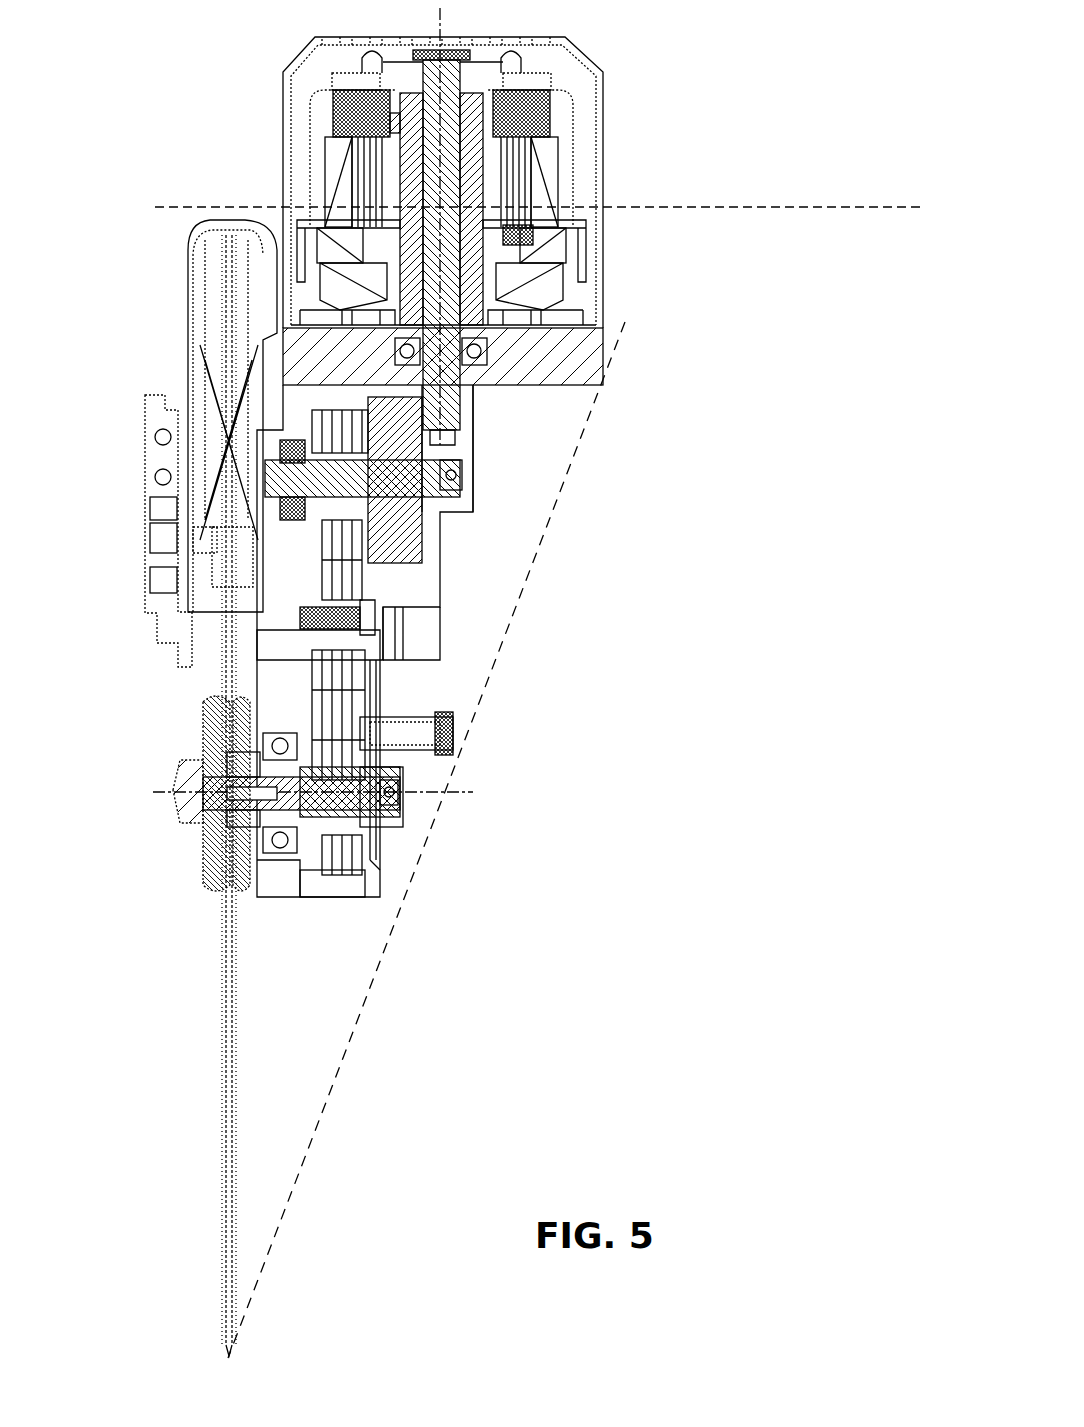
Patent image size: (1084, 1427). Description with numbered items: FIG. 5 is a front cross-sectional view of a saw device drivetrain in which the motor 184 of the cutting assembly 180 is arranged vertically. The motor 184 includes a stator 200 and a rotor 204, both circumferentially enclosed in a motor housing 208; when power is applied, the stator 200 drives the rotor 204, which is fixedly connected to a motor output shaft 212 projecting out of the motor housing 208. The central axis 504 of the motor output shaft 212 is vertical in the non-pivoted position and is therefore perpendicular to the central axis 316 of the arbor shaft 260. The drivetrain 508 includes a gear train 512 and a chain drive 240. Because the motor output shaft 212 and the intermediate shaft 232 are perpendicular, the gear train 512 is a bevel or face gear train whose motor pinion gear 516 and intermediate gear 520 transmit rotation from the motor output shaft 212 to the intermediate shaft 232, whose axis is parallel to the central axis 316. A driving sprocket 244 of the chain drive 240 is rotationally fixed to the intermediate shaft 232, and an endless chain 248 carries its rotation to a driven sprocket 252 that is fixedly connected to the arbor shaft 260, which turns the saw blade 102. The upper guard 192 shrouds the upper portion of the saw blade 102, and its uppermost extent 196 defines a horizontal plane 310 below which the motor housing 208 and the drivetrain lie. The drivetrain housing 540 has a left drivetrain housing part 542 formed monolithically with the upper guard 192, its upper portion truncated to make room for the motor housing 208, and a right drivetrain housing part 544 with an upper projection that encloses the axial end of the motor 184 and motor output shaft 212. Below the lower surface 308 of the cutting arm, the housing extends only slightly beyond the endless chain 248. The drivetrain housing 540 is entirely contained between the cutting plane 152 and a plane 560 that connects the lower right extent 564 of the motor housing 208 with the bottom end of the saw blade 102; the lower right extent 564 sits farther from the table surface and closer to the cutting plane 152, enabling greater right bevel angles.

The saw blade 102 is at (226, 310).
The cutting plane 152 is at (225, 1382).
The cutting assembly 180 is at (797, 180).
The motor 184 is at (622, 280).
The upper guard 192 is at (186, 247).
The uppermost extent 196 is at (230, 205).
The stator 200 is at (523, 158).
The rotor 204 is at (473, 132).
The motor housing 208 is at (599, 192).
The motor output shaft 212 is at (453, 105).
The intermediate shaft 232 is at (400, 480).
The chain drive 240 is at (376, 852).
The driving sprocket 244 is at (312, 426).
The endless chain 248 is at (348, 708).
The driven sprocket 252 is at (340, 820).
The arbor shaft 260 is at (377, 785).
The lower surface 308 is at (403, 615).
The horizontal plane 310 is at (178, 205).
The central axis 316 is at (432, 793).
The central axis 504 is at (441, 18).
The drivetrain 508 is at (416, 583).
The gear train 512 is at (435, 446).
The motor pinion gear 516 is at (443, 413).
The intermediate gear 520 is at (392, 530).
The drivetrain housing 540 is at (325, 922).
The left drivetrain housing part 542 is at (283, 880).
The right drivetrain housing part 544 is at (358, 884).
The plane 560 is at (578, 458).
The lower right extent 564 is at (606, 383).